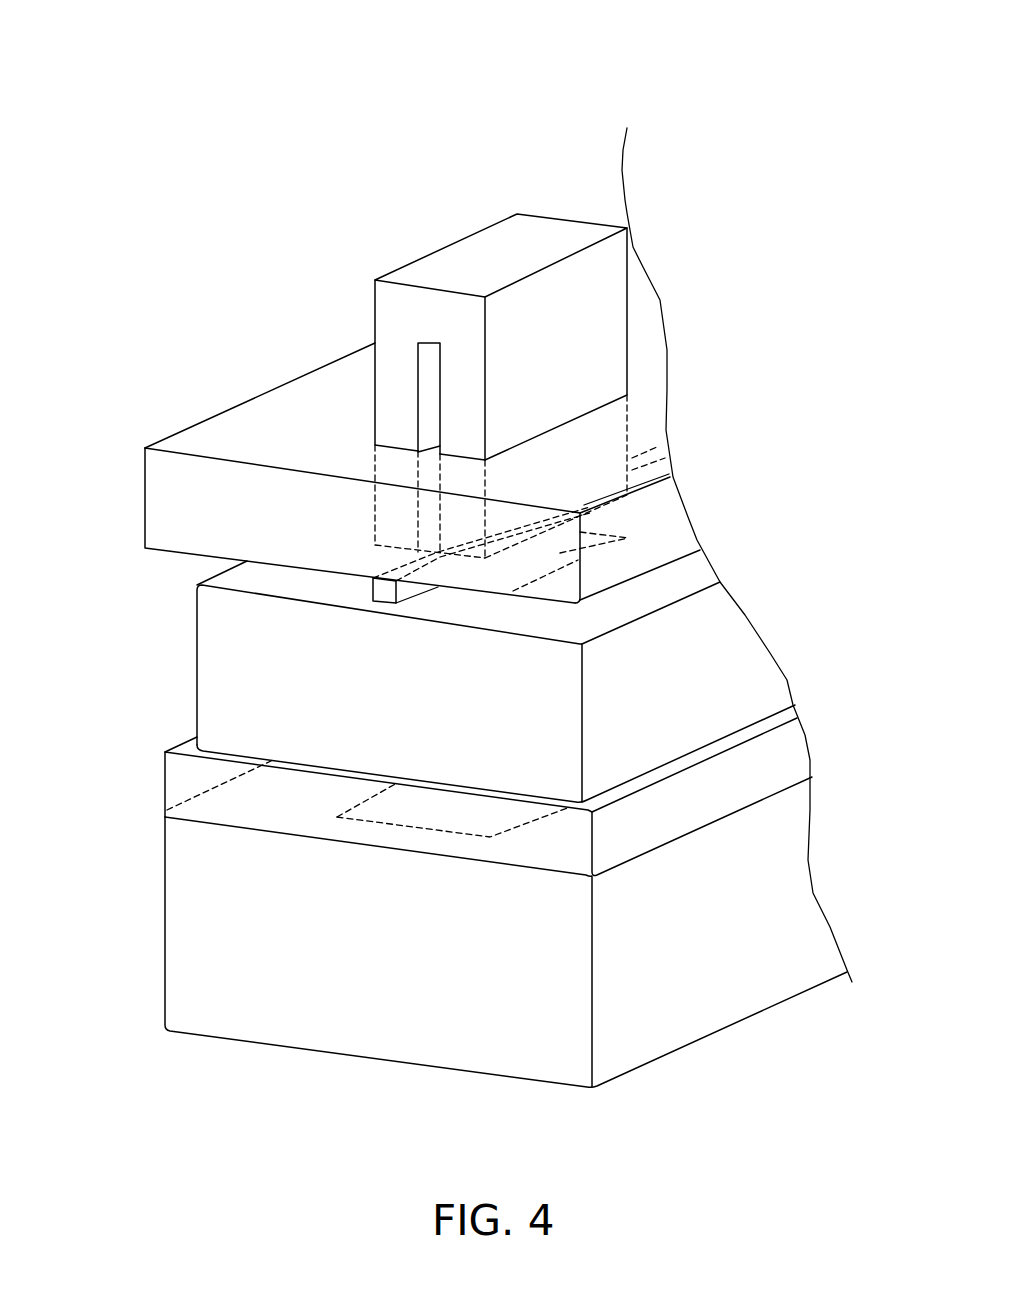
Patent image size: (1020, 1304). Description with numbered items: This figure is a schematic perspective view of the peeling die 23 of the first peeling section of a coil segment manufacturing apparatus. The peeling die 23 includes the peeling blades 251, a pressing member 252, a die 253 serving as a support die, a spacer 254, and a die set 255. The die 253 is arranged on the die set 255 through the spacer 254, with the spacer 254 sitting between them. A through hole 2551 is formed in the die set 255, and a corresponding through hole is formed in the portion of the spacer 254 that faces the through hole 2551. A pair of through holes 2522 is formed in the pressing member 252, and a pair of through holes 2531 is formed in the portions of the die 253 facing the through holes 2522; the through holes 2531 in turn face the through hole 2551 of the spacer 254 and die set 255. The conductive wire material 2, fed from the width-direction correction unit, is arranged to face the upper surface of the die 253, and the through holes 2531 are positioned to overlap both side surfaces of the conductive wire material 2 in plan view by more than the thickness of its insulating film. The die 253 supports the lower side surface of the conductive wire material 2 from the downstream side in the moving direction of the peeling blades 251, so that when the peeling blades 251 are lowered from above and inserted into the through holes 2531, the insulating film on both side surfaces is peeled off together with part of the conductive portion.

The peeling die 23 is at (465, 100).
The conductive wire material 2 is at (380, 592).
The peeling blades 251 is at (462, 385).
The pressing member 252 is at (177, 498).
The through holes 2522 is at (570, 420).
The die 253 is at (683, 678).
The through holes 2531 is at (560, 570).
The spacer 254 is at (527, 850).
The through hole 2551 is at (380, 818).
The die set 255 is at (677, 980).